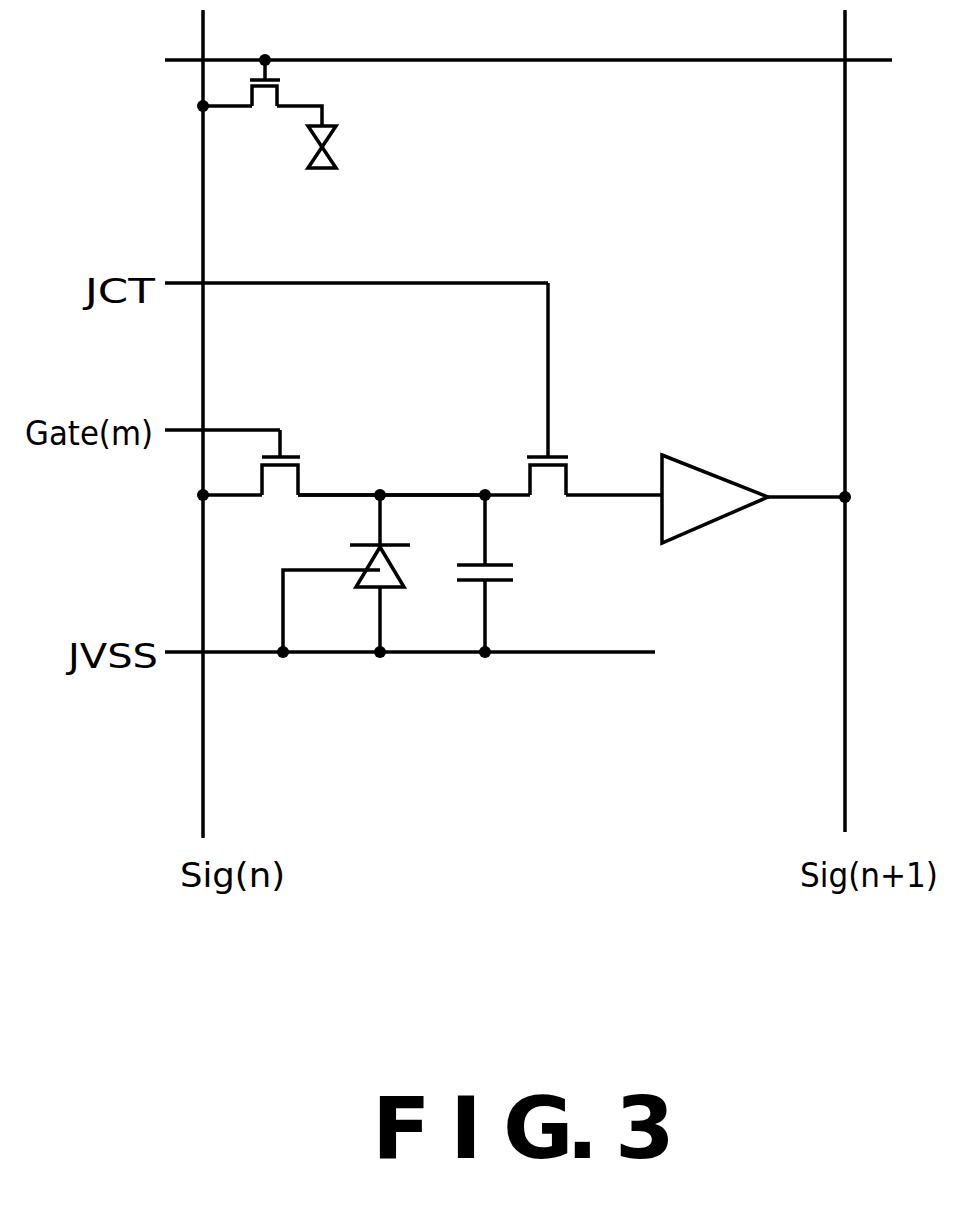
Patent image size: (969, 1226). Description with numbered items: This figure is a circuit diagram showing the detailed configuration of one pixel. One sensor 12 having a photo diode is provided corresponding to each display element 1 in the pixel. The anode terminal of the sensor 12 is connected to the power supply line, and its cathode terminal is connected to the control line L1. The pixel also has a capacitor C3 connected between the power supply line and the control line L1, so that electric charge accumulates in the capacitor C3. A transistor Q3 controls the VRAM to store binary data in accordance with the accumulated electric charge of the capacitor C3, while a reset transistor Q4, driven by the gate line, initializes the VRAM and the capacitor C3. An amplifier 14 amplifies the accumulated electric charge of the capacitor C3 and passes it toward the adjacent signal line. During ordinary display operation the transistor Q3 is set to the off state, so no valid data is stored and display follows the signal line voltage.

The display element 1 is at (261, 108).
The sensor 12 is at (402, 597).
The amplifier 14 is at (688, 468).
The transistor Q3 is at (522, 475).
The reset transistor Q4 is at (282, 486).
The control line L1 is at (339, 490).
The capacitor C3 is at (522, 573).